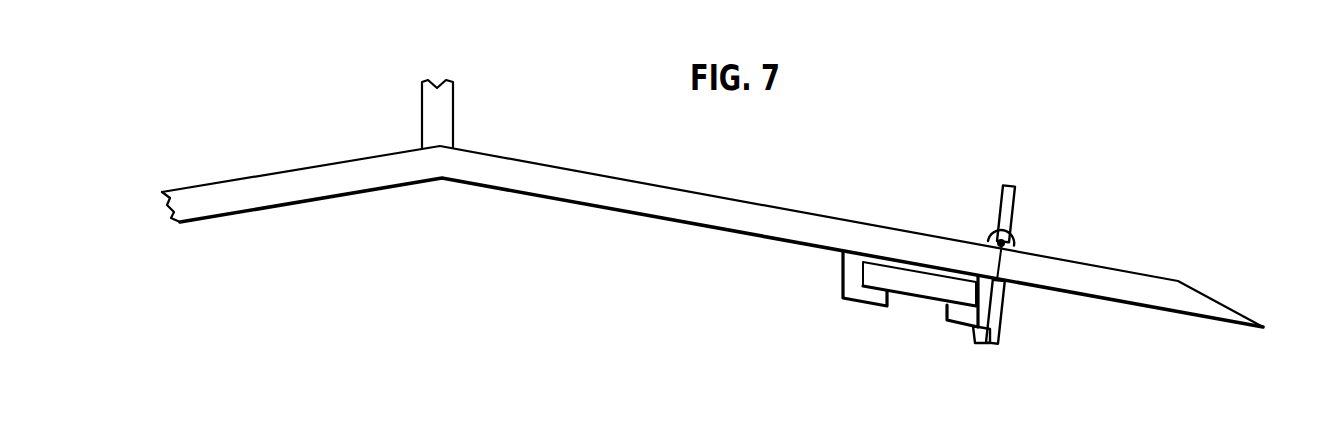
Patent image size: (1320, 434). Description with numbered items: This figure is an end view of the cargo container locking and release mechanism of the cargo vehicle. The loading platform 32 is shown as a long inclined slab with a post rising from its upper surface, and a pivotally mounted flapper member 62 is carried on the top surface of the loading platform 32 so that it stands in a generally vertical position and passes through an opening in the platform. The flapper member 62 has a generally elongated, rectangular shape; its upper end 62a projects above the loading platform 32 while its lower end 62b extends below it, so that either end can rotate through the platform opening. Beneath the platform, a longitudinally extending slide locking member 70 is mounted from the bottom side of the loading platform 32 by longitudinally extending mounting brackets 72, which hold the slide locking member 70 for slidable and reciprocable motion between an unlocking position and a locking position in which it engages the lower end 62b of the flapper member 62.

The loading platform 32 is at (683, 198).
The slide locking member 70 is at (915, 290).
The mounting brackets 72 is at (865, 297).
The flapper member 62 is at (1031, 244).
The upper end of flapper member 62a is at (1013, 185).
The lower end of flapper member 62b is at (992, 343).